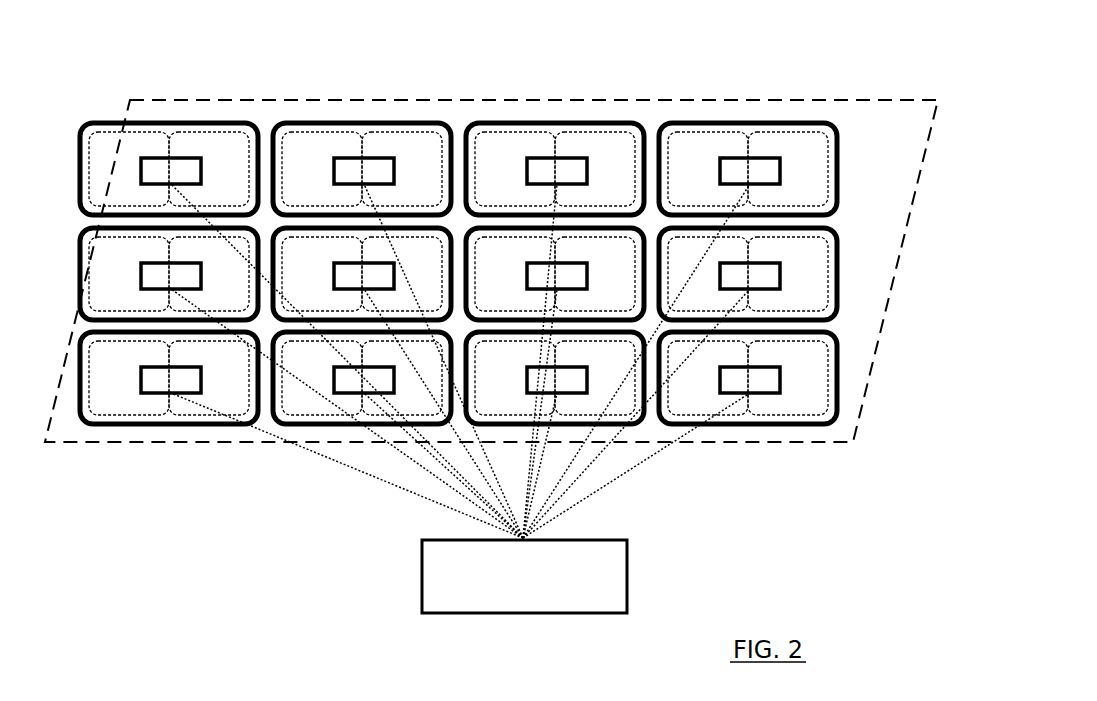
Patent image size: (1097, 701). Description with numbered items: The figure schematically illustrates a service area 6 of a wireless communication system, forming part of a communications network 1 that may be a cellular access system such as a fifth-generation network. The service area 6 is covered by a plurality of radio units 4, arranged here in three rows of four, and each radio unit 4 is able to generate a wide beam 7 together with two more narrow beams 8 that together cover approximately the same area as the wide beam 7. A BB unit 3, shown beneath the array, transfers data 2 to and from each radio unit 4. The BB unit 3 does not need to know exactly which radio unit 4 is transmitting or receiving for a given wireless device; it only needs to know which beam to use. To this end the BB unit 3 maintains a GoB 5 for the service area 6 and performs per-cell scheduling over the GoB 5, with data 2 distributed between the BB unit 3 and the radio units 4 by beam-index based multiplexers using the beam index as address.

The communications network 1 is at (214, 41).
The data 2 is at (413, 482).
The BB unit 3 is at (513, 587).
The radio unit 4 is at (183, 160).
The GoB 5 is at (598, 106).
The service area 6 is at (893, 282).
The wide beam 7 is at (197, 420).
The narrow beams 8 is at (178, 403).